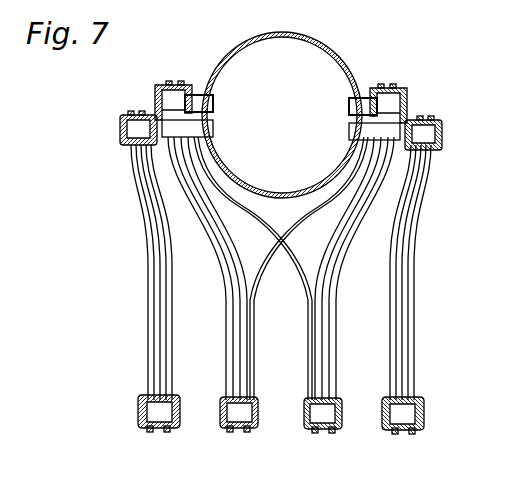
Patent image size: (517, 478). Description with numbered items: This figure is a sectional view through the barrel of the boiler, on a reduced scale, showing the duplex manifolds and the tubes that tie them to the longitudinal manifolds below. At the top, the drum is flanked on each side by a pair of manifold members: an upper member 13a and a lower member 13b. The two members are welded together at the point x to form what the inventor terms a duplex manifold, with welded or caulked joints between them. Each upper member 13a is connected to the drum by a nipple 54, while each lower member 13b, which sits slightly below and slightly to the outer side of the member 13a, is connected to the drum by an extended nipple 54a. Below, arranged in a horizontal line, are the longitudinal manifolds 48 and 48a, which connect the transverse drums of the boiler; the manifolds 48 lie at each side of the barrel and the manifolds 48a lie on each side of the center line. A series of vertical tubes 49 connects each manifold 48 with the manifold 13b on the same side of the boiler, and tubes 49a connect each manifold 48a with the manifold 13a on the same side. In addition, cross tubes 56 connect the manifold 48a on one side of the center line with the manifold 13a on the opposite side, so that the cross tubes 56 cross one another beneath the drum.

The upper manifold member 13a is at (431, 95).
The lower manifold member 13b is at (464, 131).
The weld X is at (156, 108).
The nipple 54 is at (214, 103).
The extended nipple 54a is at (212, 136).
The cross tube 56 is at (298, 259).
The vertical tube 49 is at (147, 298).
The tube 49a is at (346, 298).
The longitudinal manifold 48 is at (139, 396).
The longitudinal manifold 48a is at (343, 390).